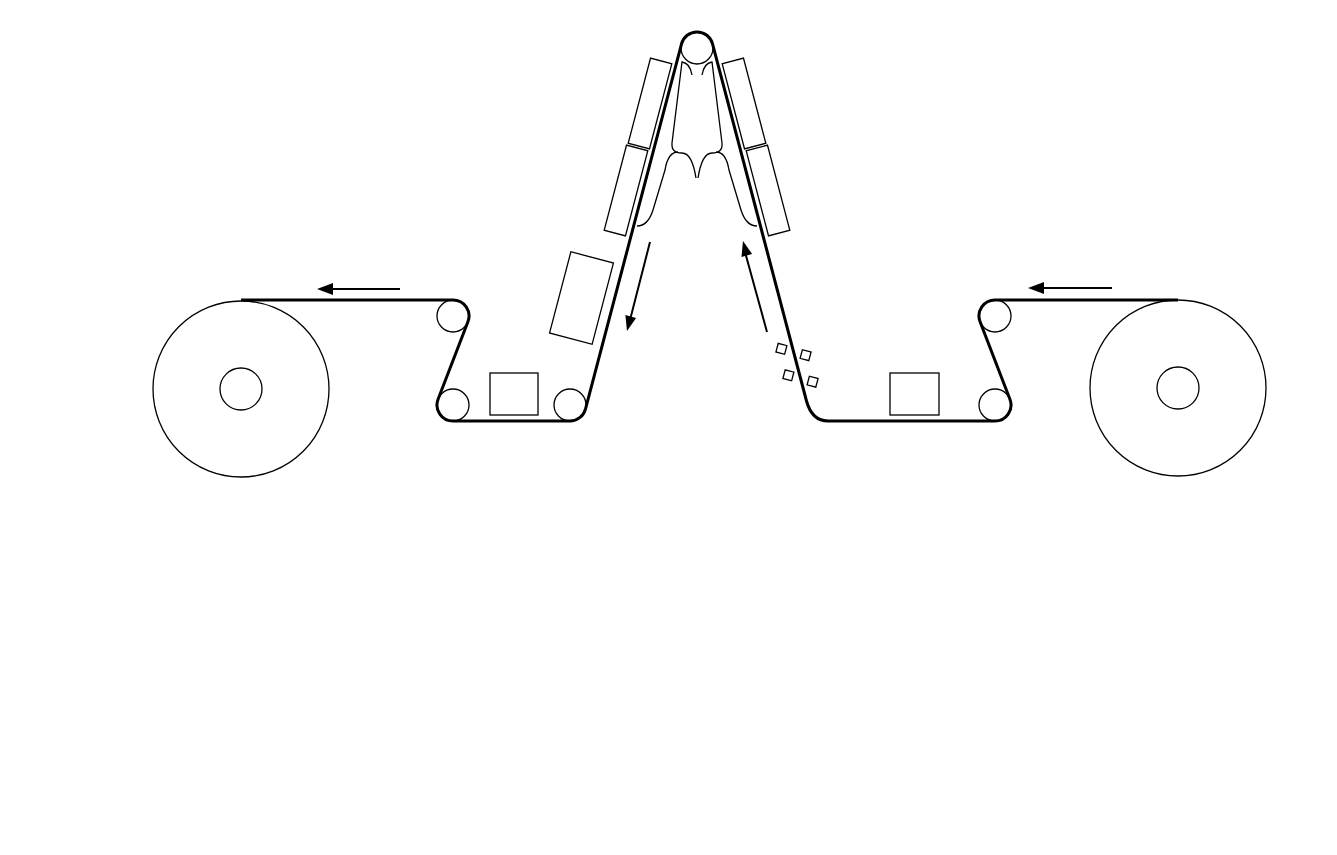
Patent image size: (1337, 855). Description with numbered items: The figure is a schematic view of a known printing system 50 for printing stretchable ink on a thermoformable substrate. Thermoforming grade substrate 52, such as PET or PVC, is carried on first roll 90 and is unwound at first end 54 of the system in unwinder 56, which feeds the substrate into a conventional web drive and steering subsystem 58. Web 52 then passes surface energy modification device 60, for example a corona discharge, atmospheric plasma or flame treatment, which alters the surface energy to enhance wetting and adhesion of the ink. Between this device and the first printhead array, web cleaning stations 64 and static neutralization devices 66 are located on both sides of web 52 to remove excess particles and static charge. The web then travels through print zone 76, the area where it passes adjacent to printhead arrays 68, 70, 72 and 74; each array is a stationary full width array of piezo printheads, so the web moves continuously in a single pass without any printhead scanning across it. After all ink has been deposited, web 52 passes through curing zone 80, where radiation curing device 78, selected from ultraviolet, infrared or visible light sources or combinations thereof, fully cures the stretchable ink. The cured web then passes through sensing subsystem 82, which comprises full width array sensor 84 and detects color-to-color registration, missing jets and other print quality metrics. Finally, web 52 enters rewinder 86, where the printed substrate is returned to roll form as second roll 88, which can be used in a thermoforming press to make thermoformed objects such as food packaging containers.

The printing system 50 is at (915, 80).
The thermoforming grade substrate 52 is at (1130, 300).
The first end 54 is at (1138, 353).
The unwinder 56 is at (1166, 400).
The web drive and steering subsystem 58 is at (1010, 373).
The surface energy modification device 60 is at (912, 373).
The web cleaning stations 64 is at (782, 385).
The static neutralization devices 66 is at (773, 355).
The printhead array 68 is at (779, 188).
The printhead array 70 is at (758, 108).
The printhead array 72 is at (636, 108).
The printhead array 74 is at (615, 188).
The print zone 76 is at (697, 144).
The radiation curing device 78 is at (562, 292).
The curing zone 80 is at (659, 254).
The sensing subsystem 82 is at (525, 396).
The full width array sensor 84 is at (513, 421).
The rewinder 86 is at (259, 396).
The second roll 88 is at (185, 339).
The first roll 90 is at (1213, 322).